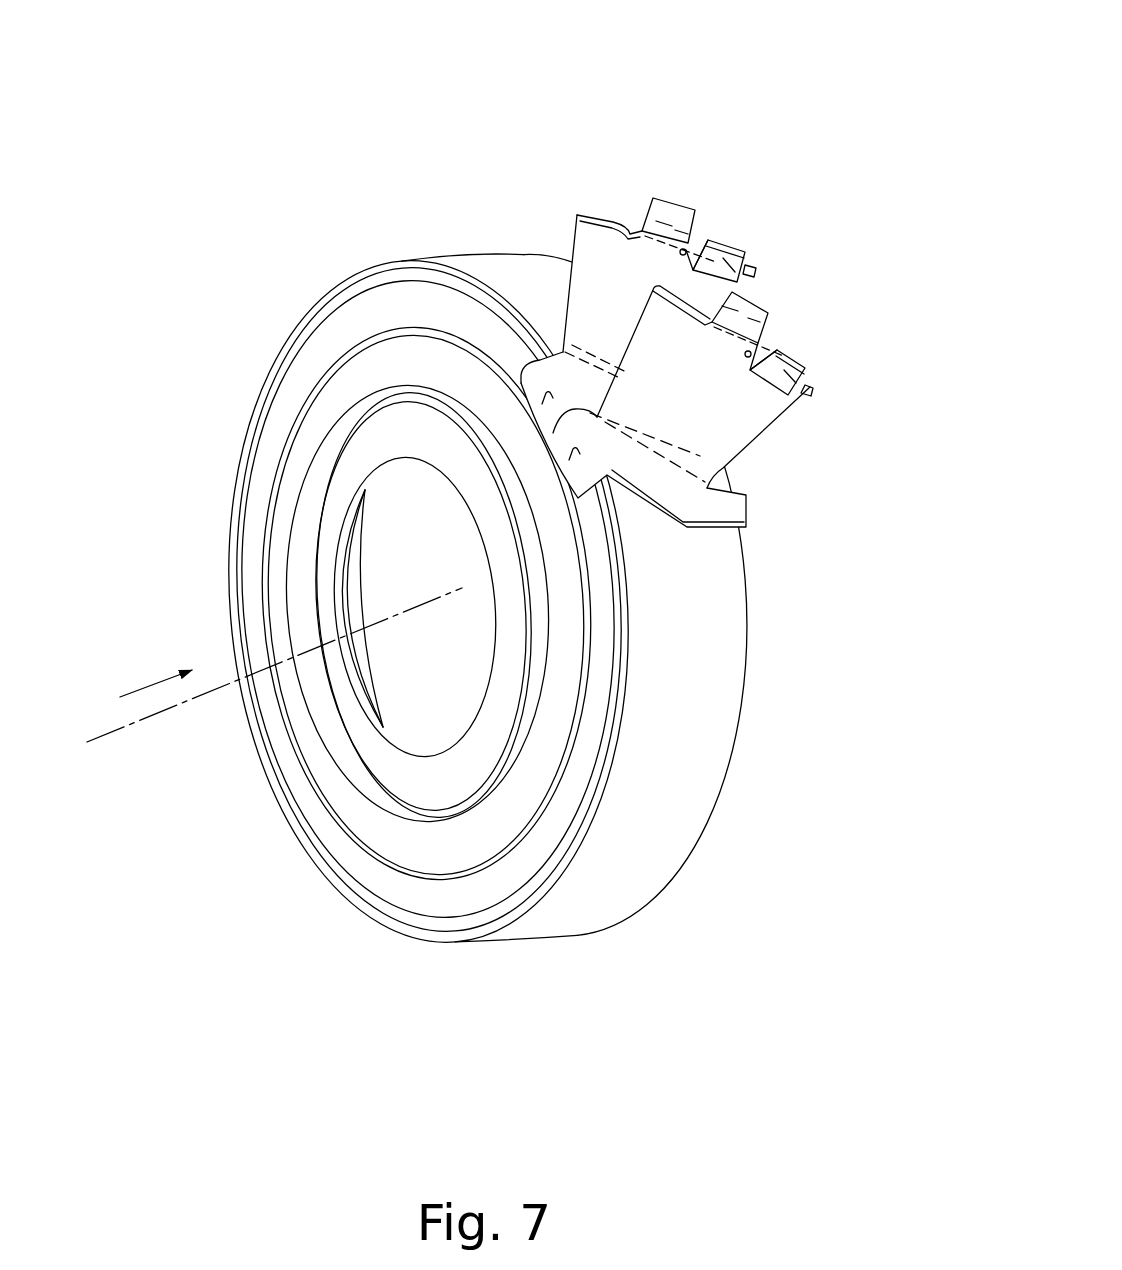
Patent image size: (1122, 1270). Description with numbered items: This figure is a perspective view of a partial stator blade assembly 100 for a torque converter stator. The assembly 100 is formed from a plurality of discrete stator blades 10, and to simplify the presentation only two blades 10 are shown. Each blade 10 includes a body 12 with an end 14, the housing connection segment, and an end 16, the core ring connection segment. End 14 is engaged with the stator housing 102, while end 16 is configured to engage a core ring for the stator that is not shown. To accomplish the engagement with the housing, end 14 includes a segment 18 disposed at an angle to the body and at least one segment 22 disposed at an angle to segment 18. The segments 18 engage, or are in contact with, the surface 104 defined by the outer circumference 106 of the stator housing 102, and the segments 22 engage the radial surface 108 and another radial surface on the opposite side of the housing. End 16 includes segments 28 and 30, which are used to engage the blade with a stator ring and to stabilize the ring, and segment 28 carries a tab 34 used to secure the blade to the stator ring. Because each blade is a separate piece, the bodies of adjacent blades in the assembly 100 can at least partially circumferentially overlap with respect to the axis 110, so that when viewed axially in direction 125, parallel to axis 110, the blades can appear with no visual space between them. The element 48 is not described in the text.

The stator blade assembly 100 is at (816, 96).
The stator blade 10 is at (570, 238).
The body 12 is at (632, 297).
The end 14 is at (774, 530).
The end 16 is at (826, 373).
The segment 18 is at (660, 480).
The segment 22 is at (532, 358).
The segment 28 is at (742, 240).
The segment 30 is at (641, 201).
The tab 34 is at (746, 278).
The sensor element 48 is at (673, 213).
The stator housing 102 is at (382, 882).
The surface 104 is at (632, 862).
The outer circumference 106 is at (708, 834).
The radial surface 108 is at (350, 325).
The axis 110 is at (123, 723).
The direction 125 is at (138, 690).